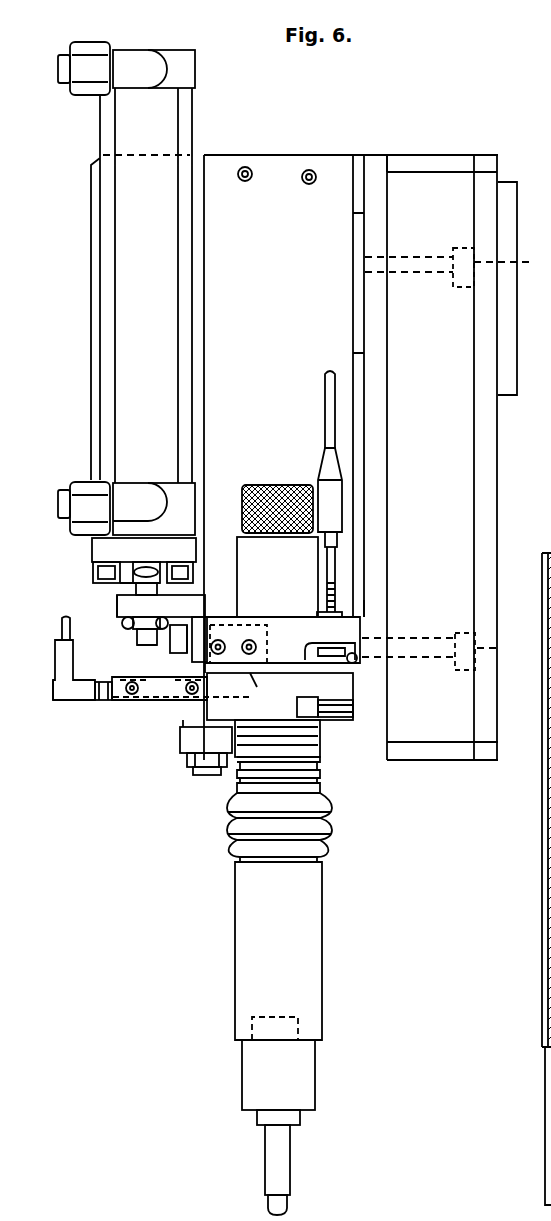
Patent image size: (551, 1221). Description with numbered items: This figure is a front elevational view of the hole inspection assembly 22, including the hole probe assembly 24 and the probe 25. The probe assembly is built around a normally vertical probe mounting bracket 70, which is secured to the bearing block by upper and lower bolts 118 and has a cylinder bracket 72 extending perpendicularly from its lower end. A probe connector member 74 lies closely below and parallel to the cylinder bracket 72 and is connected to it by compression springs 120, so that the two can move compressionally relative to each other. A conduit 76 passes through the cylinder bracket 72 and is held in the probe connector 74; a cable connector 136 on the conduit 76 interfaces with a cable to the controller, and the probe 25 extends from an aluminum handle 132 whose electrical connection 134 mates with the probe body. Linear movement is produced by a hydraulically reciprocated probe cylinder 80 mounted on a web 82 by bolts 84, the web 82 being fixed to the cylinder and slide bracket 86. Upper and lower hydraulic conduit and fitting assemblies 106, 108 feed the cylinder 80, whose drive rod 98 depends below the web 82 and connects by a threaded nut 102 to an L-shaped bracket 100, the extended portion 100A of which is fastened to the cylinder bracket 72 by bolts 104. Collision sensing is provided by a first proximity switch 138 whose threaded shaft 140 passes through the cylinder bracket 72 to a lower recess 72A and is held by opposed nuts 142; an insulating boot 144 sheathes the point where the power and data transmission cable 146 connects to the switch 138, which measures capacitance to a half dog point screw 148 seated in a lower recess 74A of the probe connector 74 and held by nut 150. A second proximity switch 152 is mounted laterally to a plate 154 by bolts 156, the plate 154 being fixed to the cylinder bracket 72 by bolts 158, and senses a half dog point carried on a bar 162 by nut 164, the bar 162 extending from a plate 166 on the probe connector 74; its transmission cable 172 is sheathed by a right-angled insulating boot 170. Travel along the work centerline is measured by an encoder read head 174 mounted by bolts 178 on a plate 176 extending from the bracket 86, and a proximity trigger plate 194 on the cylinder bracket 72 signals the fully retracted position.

The hole inspection assembly 22 is at (481, 118).
The hole probe assembly 24 is at (437, 603).
The probe 25 is at (255, 1153).
The probe mounting bracket 70 is at (335, 312).
The cylinder bracket 72 is at (292, 640).
The lower recess 72A is at (360, 665).
The probe connector member 74 is at (357, 712).
The lower recess 74A is at (312, 727).
The conduit 76 is at (243, 560).
The probe cylinder 80 is at (130, 347).
The web 82 is at (98, 548).
The bolts 84 is at (147, 572).
The cylinder and slide bracket 86 is at (542, 940).
The drive rod 98 is at (135, 586).
The L-shaped bracket 100 is at (190, 595).
The extended portion 100A is at (200, 670).
The threaded nut 102 is at (117, 605).
The bolts 104 is at (142, 640).
The upper hydraulic conduit and fitting assembly 106 is at (143, 60).
The lower hydraulic conduit and fitting assembly 108 is at (160, 450).
The upper and lower bolts 118 is at (303, 172).
The compression springs 120 is at (279, 691).
The aluminum handle 132 is at (255, 1070).
The electrical connection 134 is at (252, 1022).
The cable connector 136 is at (272, 485).
The first proximity switch 138 is at (333, 542).
The threaded shaft 140 is at (338, 598).
The opposed nuts 142 is at (345, 613).
The insulating boot 144 is at (335, 503).
The indicator needle 146 is at (333, 392).
The half dog point screw 148 is at (355, 688).
The nut 150 is at (353, 712).
The second proximity switch 152 is at (103, 700).
The plate 154 is at (147, 645).
The bolts 156 is at (157, 700).
The bolts 158 is at (245, 596).
The bar 162 is at (233, 740).
The nut 164 is at (190, 760).
The plate 166 is at (197, 717).
The insulating right-angled boot 170 is at (77, 700).
The transmission cable 172 is at (45, 640).
The encoder read head 174 is at (458, 267).
The plate 176 is at (375, 168).
The bolts 178 is at (451, 651).
The proximity trigger plate 194 is at (545, 1090).